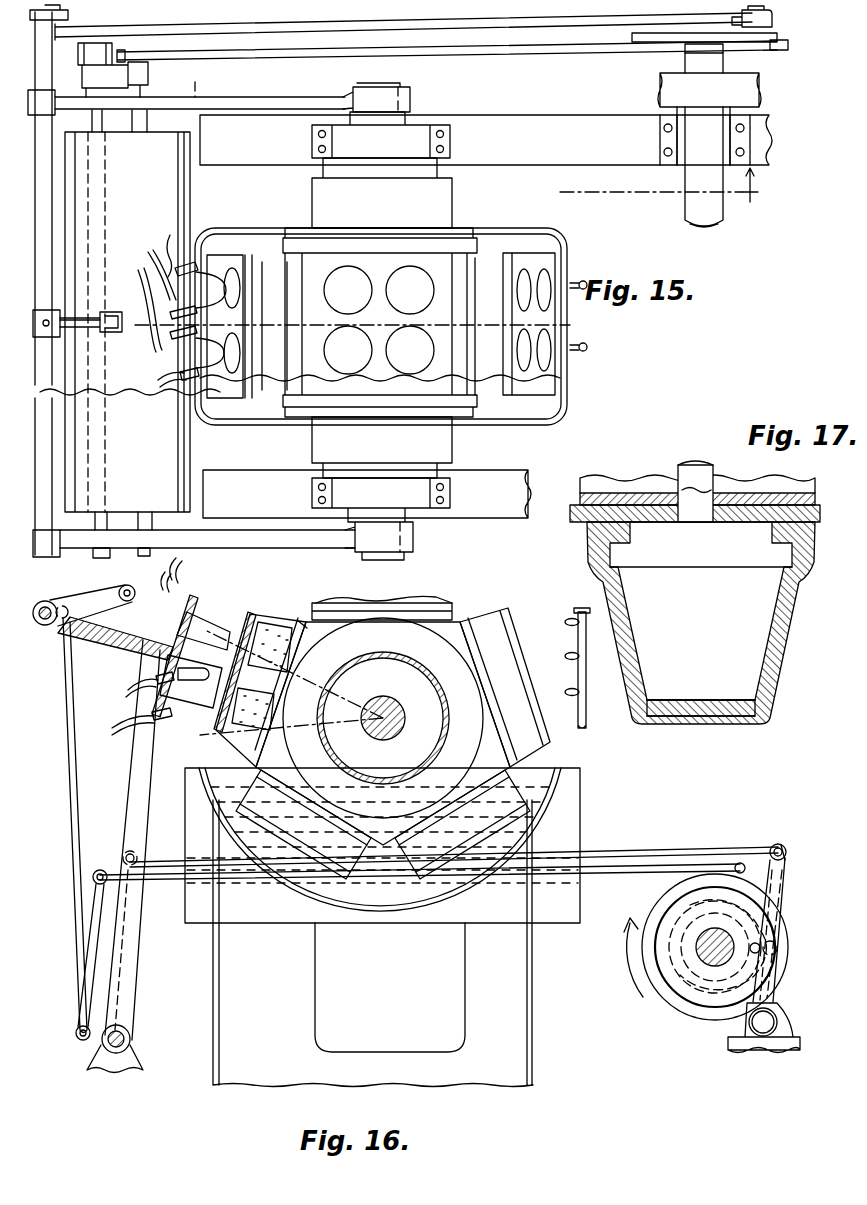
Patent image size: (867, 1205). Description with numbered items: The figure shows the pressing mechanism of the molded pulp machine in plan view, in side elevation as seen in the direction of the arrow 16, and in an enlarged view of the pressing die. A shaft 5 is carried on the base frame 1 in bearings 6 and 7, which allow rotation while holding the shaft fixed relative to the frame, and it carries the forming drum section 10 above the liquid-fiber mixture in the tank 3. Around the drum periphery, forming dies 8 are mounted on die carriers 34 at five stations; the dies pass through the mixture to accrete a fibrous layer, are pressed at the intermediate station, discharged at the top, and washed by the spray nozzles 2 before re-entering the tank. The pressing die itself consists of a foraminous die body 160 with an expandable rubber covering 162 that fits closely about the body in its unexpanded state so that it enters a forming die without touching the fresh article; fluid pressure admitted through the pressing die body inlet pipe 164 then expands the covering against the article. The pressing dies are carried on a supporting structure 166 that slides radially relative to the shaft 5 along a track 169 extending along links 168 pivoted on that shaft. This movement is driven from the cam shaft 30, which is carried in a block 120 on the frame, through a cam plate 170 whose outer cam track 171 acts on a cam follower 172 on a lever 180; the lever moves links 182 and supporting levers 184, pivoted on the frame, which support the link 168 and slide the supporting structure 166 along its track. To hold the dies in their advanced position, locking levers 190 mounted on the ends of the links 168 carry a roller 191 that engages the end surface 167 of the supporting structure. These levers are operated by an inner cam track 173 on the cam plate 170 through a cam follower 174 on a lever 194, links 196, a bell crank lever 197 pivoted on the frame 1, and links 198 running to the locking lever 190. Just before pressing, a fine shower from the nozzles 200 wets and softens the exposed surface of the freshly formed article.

In FIG. 15, the base frame 1 is at (520, 165).
In FIG. 16, the base frame 1 is at (210, 992).
In FIG. 15, the spray nozzles 2 is at (588, 280).
In FIG. 16, the spray nozzles 2 is at (582, 668).
In FIG. 15, the tank 3 is at (578, 392).
In FIG. 16, the tank 3 is at (386, 906).
In FIG. 15, the shaft 5 is at (400, 84).
In FIG. 16, the shaft 5 is at (386, 708).
In FIG. 15, the bearing 6 is at (420, 524).
In FIG. 15, the bearing 7 is at (428, 124).
In FIG. 15, the forming dies 8 is at (242, 290).
In FIG. 16, the forming dies 8 is at (272, 640).
In FIG. 15, the forming drum section 10 is at (470, 400).
In FIG. 16, the forming drum section 10 is at (452, 622).
In FIG. 15, the section line 16 is at (670, 189).
In FIG. 15, the cam shaft 30 is at (705, 228).
In FIG. 16, the cam shaft 30 is at (710, 962).
In FIG. 15, the die carriers 34 is at (247, 255).
In FIG. 16, the die carriers 34 is at (320, 603).
In FIG. 15, the bearing block 120 is at (708, 97).
In FIG. 17, the foraminous die body 160 is at (645, 660).
In FIG. 15, the expandable rubber covering 162 is at (208, 232).
In FIG. 17, the expandable rubber covering 162 is at (692, 724).
In FIG. 16, the expandable rubber covering 162 is at (225, 630).
In FIG. 15, the pressing die body inlet pipe 164 is at (152, 252).
In FIG. 17, the pressing die body inlet pipe 164 is at (697, 478).
In FIG. 16, the pressing die body inlet pipe 164 is at (136, 684).
In FIG. 17, the supporting structure 166 is at (610, 493).
In FIG. 16, the supporting structure 166 is at (138, 706).
In FIG. 16, the end surface 167 is at (62, 645).
In FIG. 15, the links 168 is at (282, 94).
In FIG. 16, the links 168 is at (208, 708).
In FIG. 15, the track 169 is at (195, 96).
In FIG. 16, the track 169 is at (162, 708).
In FIG. 15, the cam plate 170 is at (662, 35).
In FIG. 16, the cam plate 170 is at (662, 990).
In FIG. 16, the outer cam track 171 is at (796, 866).
In FIG. 15, the cam follower 172 is at (758, 44).
In FIG. 16, the cam follower 172 is at (780, 949).
In FIG. 16, the inner cam track 173 is at (668, 960).
In FIG. 15, the cam follower 174 is at (736, 28).
In FIG. 16, the cam follower 174 is at (780, 990).
In FIG. 15, the lever 180 is at (788, 48).
In FIG. 16, the lever 180 is at (786, 854).
In FIG. 15, the links 182 is at (576, 50).
In FIG. 16, the links 182 is at (636, 850).
In FIG. 15, the supporting levers 184 is at (125, 74).
In FIG. 16, the supporting levers 184 is at (130, 790).
In FIG. 15, the locking levers 190 is at (118, 345).
In FIG. 16, the locking levers 190 is at (84, 602).
In FIG. 15, the roller 191 is at (120, 335).
In FIG. 16, the roller 191 is at (130, 588).
In FIG. 15, the lever 194 is at (772, 16).
In FIG. 16, the lever 194 is at (755, 848).
In FIG. 15, the links 196 is at (518, 30).
In FIG. 16, the links 196 is at (632, 874).
In FIG. 16, the bell crank lever 197 is at (96, 932).
In FIG. 16, the links 198 is at (76, 795).
In FIG. 15, the nozzles 200 is at (154, 237).
In FIG. 16, the nozzles 200 is at (184, 580).